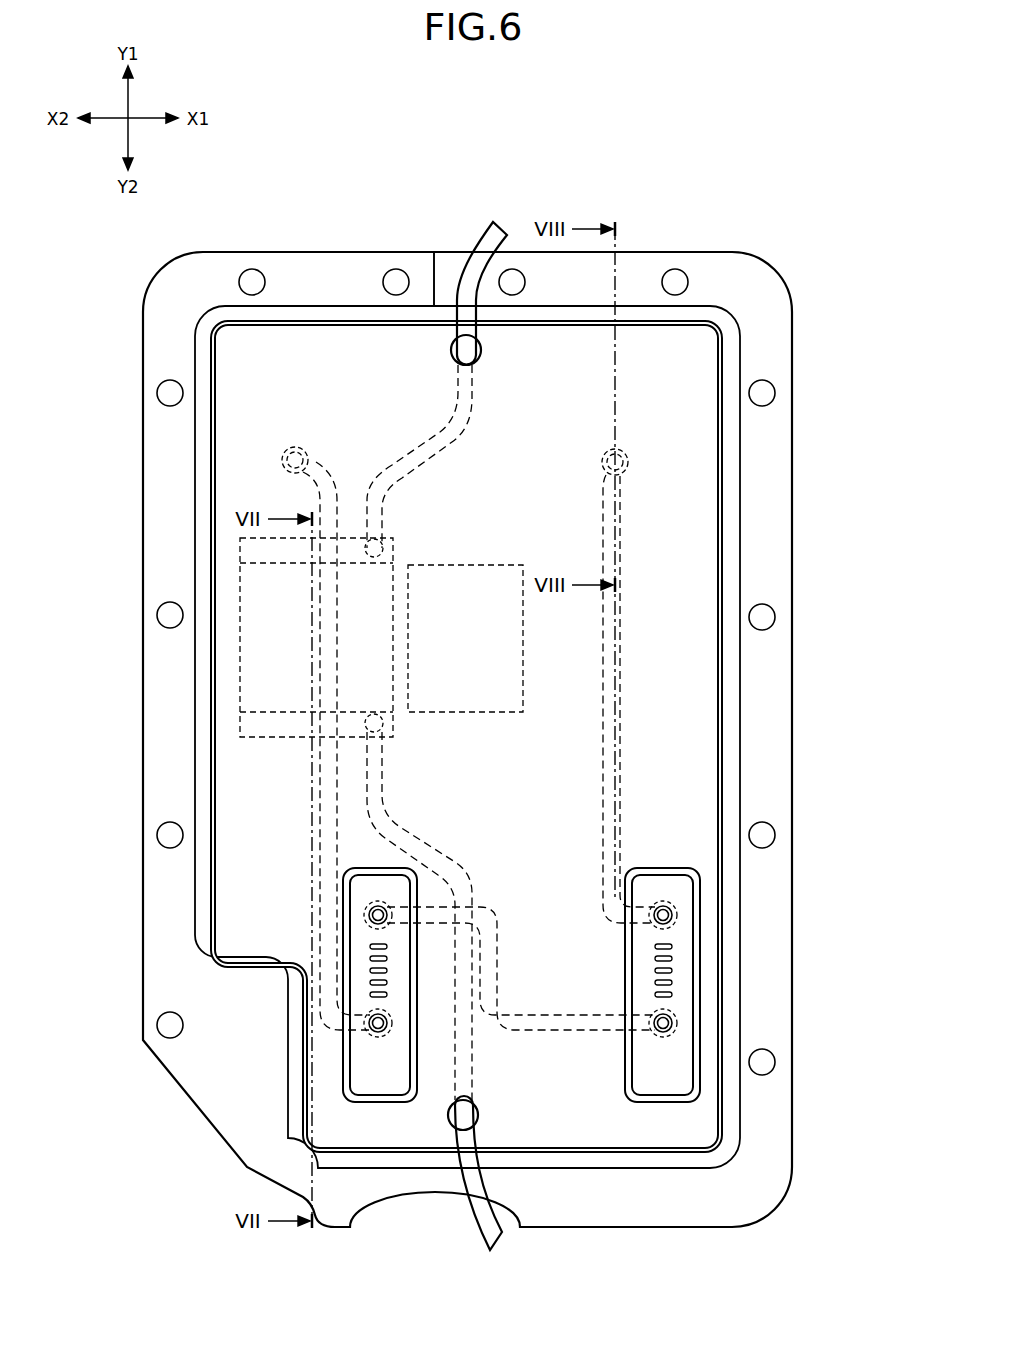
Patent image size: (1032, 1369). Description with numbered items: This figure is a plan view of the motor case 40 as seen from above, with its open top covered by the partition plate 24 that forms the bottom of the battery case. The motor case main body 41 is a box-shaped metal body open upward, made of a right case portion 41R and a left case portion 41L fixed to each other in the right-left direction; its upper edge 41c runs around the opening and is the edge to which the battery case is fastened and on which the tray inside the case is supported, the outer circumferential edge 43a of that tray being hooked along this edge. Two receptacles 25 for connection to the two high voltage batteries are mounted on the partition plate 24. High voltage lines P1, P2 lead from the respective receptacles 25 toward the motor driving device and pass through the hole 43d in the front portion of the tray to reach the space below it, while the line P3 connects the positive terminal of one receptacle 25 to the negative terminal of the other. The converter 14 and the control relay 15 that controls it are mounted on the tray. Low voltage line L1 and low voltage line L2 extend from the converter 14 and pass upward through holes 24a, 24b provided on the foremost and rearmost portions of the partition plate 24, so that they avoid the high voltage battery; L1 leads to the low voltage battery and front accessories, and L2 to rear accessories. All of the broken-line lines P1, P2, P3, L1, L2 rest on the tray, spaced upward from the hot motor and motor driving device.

The motor case 40 is at (803, 440).
The motor case main body 41 is at (688, 172).
The left case portion 41L is at (357, 252).
The right case portion 41R is at (650, 252).
The upper edge 41c is at (770, 530).
The partition plate 24 is at (692, 346).
The hole 24a is at (480, 348).
The hole 24b is at (480, 1112).
The outer circumferential edge 43a is at (735, 782).
The hole 43d is at (300, 446).
The converter 14 is at (242, 730).
The control relay 15 is at (470, 563).
The receptacle 25 is at (379, 1092).
The low voltage line L1 is at (402, 445).
The low voltage line L2 is at (426, 845).
The line P1 is at (338, 820).
The line P2 is at (622, 672).
The line P3 is at (545, 1010).